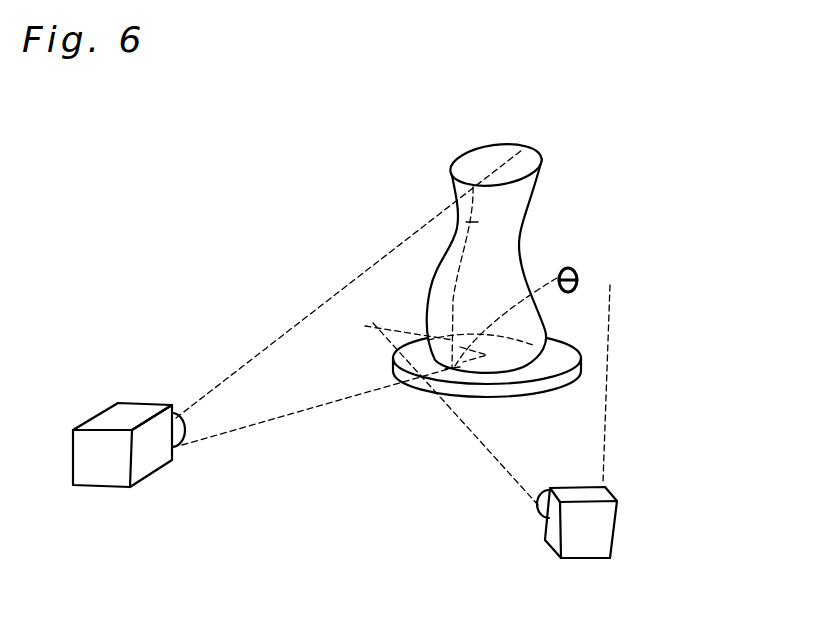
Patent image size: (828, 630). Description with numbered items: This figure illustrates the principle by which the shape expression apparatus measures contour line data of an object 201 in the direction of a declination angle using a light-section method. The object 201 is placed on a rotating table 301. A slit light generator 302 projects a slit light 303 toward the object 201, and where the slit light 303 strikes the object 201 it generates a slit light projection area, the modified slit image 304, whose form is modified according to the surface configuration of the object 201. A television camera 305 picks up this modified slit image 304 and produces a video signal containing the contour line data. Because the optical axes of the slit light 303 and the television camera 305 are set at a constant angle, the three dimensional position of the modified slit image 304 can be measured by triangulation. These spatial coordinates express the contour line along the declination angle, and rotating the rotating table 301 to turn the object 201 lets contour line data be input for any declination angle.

The object 201 is at (505, 254).
The rotating table 301 is at (487, 398).
The slit light generator 302 is at (129, 465).
The slit light 303 is at (335, 289).
The modified slit image 304 is at (470, 222).
The television camera 305 is at (614, 522).